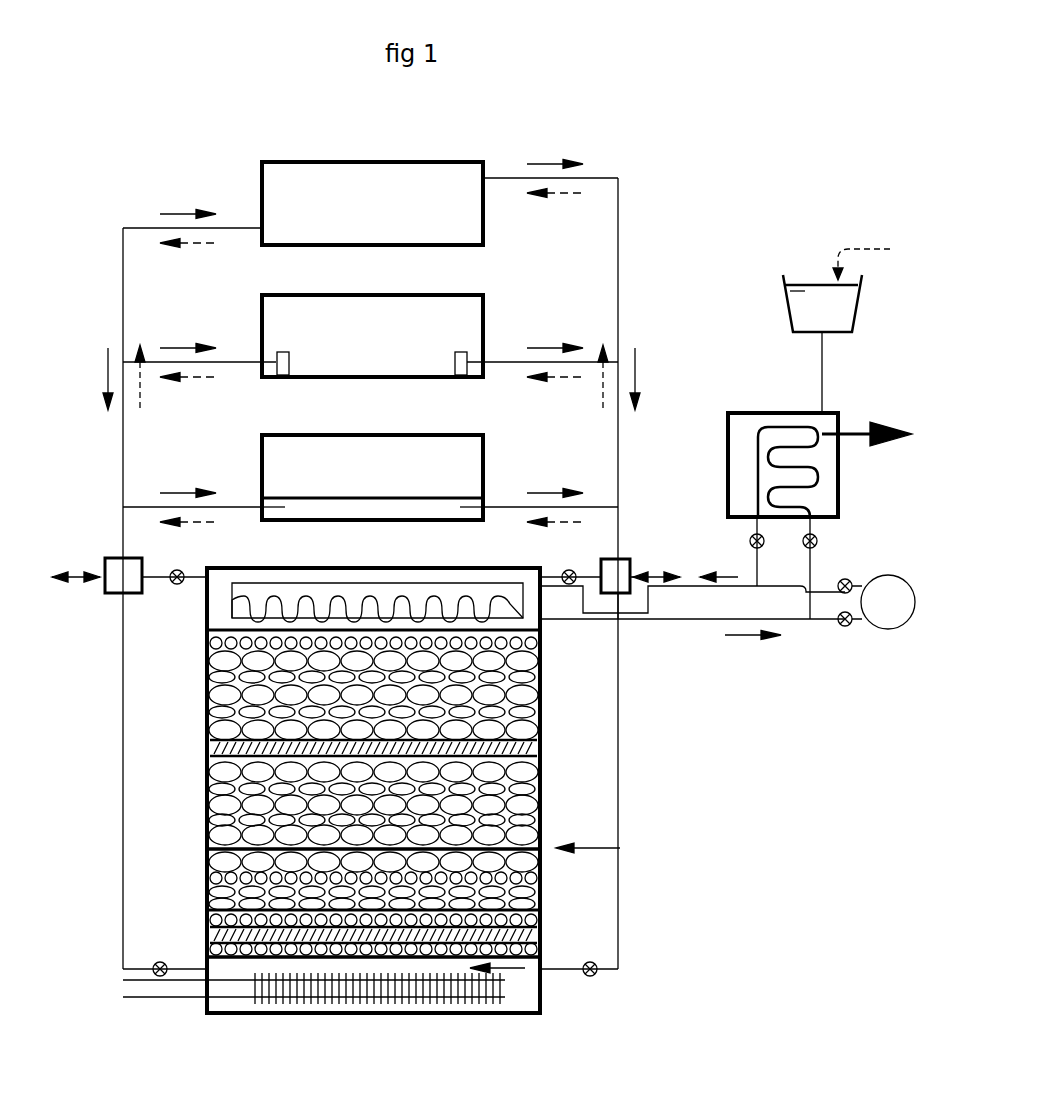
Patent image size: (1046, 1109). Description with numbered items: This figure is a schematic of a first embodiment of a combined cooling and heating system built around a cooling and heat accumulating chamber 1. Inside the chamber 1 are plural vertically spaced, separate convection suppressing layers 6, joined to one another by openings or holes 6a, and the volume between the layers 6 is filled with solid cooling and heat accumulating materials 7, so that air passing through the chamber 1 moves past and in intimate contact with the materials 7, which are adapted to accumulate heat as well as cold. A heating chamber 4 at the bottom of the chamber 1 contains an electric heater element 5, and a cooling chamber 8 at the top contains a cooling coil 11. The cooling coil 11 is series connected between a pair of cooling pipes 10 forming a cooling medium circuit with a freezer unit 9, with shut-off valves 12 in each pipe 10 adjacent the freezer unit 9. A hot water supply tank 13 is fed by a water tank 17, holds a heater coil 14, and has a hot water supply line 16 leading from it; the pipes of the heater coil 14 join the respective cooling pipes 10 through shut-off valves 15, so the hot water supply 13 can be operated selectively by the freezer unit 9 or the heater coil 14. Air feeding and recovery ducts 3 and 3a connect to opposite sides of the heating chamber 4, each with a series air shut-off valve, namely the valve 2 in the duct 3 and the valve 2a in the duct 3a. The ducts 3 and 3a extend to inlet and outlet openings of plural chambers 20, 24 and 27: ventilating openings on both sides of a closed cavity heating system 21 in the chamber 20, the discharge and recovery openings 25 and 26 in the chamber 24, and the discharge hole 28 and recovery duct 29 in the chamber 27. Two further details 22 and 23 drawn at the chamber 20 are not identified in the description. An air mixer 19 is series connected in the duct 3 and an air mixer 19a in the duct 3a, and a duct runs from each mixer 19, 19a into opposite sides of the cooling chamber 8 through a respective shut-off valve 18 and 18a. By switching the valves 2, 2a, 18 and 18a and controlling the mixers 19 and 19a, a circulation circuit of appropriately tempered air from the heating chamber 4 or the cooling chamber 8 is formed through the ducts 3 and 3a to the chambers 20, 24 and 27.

The cooling and heat accumulating chamber 1 is at (676, 861).
The air shut-off valve 2 is at (590, 977).
The air shut-off valve 2a is at (158, 977).
The air feeding and recovery duct 3 is at (618, 300).
The air feeding and recovery duct 3a is at (123, 316).
The heating chamber 4 is at (520, 998).
The electric heater element 5 is at (365, 993).
The convection suppressing layers 6 is at (290, 820).
The openings or holes 6a is at (295, 833).
The solid cooling and heat accumulating materials 7 is at (540, 930).
The cooling chamber 8 is at (342, 585).
The freezer unit 9 is at (898, 625).
The cooling pipes 10 is at (665, 619).
The cooling coil 11 is at (232, 604).
The shut-off valves 12 is at (840, 592).
The hot water supply tank 13 is at (858, 400).
The heater coil 14 is at (790, 425).
The shut-off valves 15 is at (762, 547).
The hot water supply line 16 is at (855, 428).
The water tank 17 is at (770, 262).
The shut-off valve 18 is at (572, 585).
The shut-off valve 18a is at (179, 570).
The air mixer 19 is at (615, 572).
The air mixer 19a is at (118, 585).
The chamber 20 is at (372, 477).
The closed cavity heating system 21 is at (355, 502).
The outlet 22 is at (460, 507).
The inlet 23 is at (285, 507).
The chamber 24 is at (372, 336).
The discharge opening 25 is at (467, 356).
The recovery opening 26 is at (277, 360).
The chamber 27 is at (372, 203).
The discharge hole 28 is at (283, 228).
The recovery duct 29 is at (455, 175).